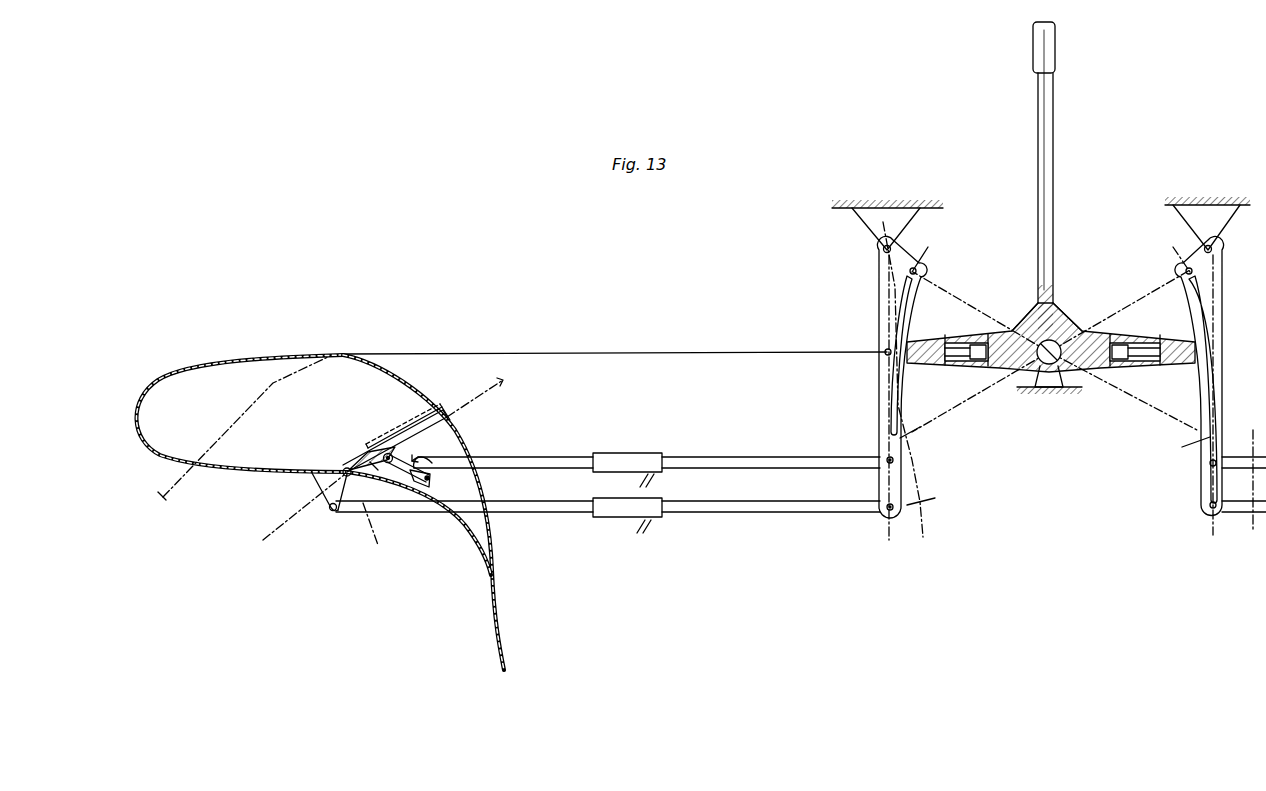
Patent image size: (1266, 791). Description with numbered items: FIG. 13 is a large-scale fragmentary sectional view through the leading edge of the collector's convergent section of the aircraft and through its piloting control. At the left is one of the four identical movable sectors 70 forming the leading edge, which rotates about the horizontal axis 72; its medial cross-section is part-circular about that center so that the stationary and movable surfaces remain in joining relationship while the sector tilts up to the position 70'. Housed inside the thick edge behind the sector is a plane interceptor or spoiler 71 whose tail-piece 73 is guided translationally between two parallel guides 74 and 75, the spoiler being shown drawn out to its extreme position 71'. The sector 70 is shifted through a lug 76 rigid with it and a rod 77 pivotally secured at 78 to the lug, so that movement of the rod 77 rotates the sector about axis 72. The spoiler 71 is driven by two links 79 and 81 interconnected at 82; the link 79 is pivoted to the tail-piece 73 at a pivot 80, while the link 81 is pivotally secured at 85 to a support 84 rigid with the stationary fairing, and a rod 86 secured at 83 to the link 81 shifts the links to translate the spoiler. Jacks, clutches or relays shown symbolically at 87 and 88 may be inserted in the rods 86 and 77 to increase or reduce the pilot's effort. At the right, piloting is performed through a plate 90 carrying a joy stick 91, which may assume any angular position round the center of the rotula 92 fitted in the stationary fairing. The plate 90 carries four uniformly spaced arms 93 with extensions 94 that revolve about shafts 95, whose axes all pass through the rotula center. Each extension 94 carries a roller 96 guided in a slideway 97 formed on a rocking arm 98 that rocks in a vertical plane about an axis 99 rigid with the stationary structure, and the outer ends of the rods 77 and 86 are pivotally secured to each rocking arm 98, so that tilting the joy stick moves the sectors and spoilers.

The movable sector 70 is at (511, 491).
The position of movable sector 70' is at (235, 428).
The interceptor or spoiler 71 is at (395, 432).
The position of spoiler 71' is at (475, 388).
The axis of rotation 72 is at (345, 468).
The tail-piece 73 is at (371, 455).
The guide 74 is at (410, 433).
The guide 75 is at (450, 420).
The lug 76 is at (326, 487).
The rod 77 is at (432, 506).
The pivot 78 is at (330, 510).
The link 79 is at (384, 472).
The pivot 80 is at (387, 454).
The link 81 is at (400, 470).
The interconnection pivot 82 is at (378, 470).
The pivot 83 is at (420, 462).
The support 84 is at (431, 487).
The pivot 85 is at (430, 478).
The rod 86 is at (548, 461).
The jack or clutch 87 is at (633, 462).
The jack or clutch 88 is at (620, 512).
The plate 90 is at (1105, 333).
The joy stick 91 is at (1046, 152).
The rotula 92 is at (1060, 389).
The arm 93 is at (1000, 338).
The extension 94 is at (940, 342).
The shaft 95 is at (958, 362).
The roller 96 is at (885, 351).
The slideway 97 is at (889, 397).
The rocking arm 98 is at (880, 306).
The axis 99 is at (900, 247).